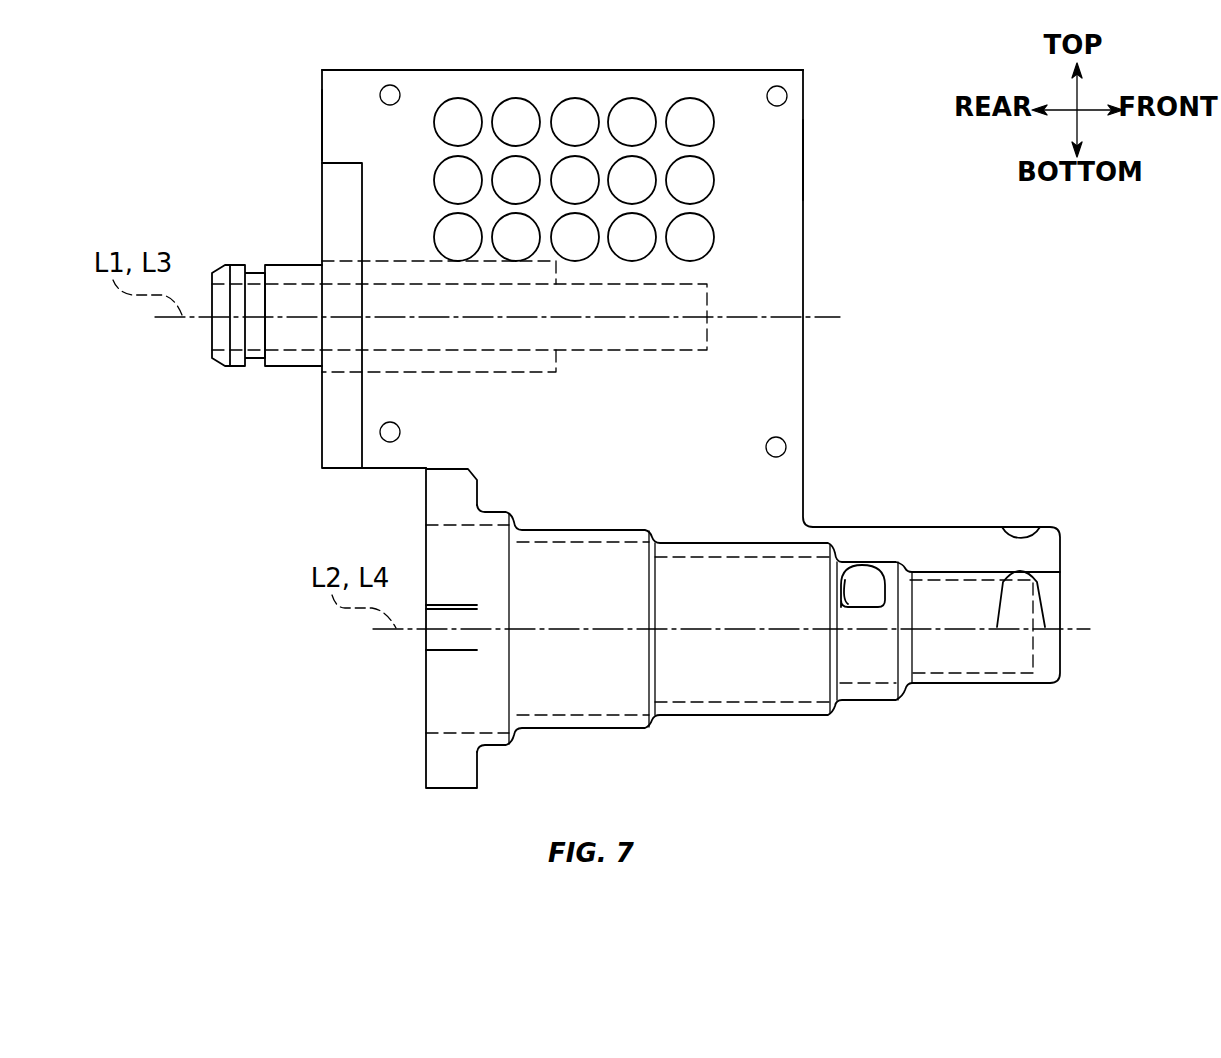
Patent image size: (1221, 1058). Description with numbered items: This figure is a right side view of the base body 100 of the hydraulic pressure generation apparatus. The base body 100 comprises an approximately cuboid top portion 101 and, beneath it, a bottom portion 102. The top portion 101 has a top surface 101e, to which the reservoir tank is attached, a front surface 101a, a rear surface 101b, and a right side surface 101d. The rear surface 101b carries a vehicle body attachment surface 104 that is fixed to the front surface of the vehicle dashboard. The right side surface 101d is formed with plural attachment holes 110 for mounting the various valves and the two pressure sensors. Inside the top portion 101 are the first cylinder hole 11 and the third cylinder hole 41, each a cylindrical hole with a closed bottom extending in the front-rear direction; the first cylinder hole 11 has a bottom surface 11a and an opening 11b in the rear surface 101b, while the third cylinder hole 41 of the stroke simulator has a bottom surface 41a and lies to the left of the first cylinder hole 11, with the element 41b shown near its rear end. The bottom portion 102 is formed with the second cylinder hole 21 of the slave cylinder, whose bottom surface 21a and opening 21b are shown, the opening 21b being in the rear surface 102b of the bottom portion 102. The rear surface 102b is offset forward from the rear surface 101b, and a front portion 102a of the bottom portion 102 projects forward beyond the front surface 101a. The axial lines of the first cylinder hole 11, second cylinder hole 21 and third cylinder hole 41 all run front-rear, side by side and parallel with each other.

The base body 100 is at (316, 68).
The top portion 101 is at (772, 130).
The front surface 101a is at (805, 167).
The rear surface 101b is at (322, 130).
The right side surface 101d is at (768, 298).
The top surface 101e is at (738, 68).
The attachment holes 110 is at (524, 100).
The first cylinder hole 11 is at (647, 354).
The bottom surface 11a is at (710, 331).
The opening 11b is at (235, 348).
The third cylinder hole 41 is at (388, 372).
The bottom surface 41a is at (464, 472).
The inner ring of first bearing 41b is at (348, 375).
The vehicle body attachment surface 104 is at (322, 427).
The second cylinder hole 21 is at (725, 553).
The bottom surface 21a is at (1018, 676).
The opening 21b is at (452, 733).
The bottom portion 102 is at (748, 707).
The front portion 102a is at (965, 543).
The rear surface 102b is at (426, 750).